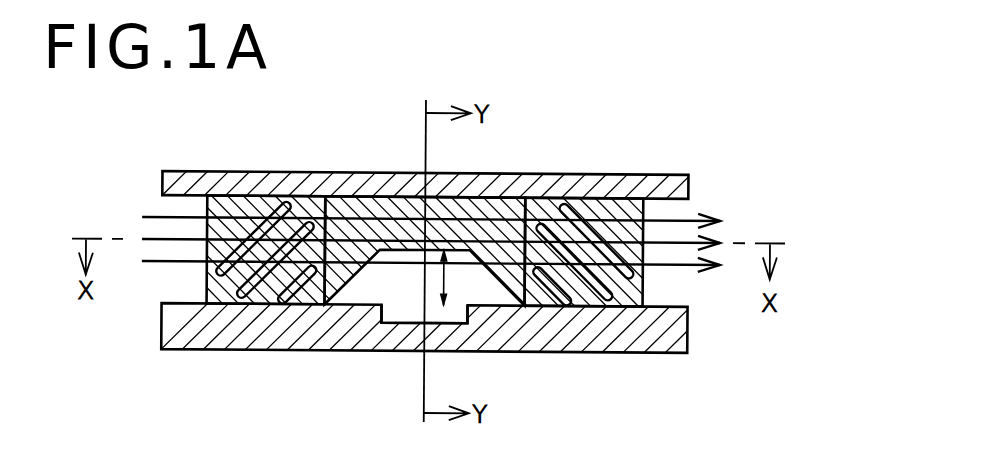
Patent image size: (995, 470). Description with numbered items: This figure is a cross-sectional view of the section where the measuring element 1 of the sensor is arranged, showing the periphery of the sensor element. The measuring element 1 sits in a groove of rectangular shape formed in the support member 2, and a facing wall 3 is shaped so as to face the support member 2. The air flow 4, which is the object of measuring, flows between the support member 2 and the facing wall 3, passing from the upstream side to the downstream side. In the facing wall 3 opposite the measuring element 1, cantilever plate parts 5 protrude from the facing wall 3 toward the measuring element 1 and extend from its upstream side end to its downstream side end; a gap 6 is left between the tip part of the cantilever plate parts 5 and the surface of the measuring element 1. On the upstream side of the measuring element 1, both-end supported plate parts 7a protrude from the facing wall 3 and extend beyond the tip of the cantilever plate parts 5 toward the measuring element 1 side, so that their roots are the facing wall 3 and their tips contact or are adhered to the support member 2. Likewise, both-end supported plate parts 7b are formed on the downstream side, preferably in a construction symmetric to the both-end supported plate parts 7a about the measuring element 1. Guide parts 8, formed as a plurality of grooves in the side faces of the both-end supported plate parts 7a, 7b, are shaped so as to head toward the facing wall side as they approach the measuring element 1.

The measuring element 1 is at (395, 313).
The support member 2 is at (272, 328).
The facing wall 3 is at (311, 186).
The air flow 4 is at (162, 219).
The cantilever plate parts 5 is at (458, 204).
The gap 6 is at (450, 284).
The both-end supported plate parts 7a is at (234, 207).
The both-end supported plate parts 7b is at (605, 206).
The guide parts 8 is at (227, 283).